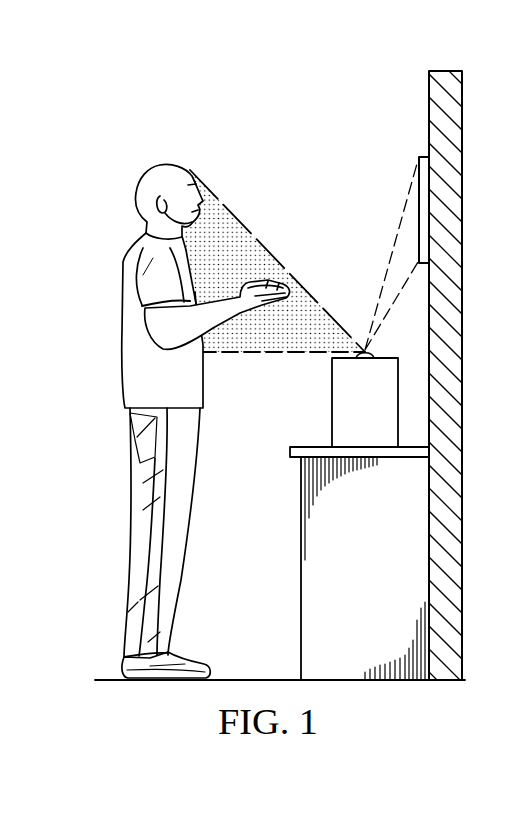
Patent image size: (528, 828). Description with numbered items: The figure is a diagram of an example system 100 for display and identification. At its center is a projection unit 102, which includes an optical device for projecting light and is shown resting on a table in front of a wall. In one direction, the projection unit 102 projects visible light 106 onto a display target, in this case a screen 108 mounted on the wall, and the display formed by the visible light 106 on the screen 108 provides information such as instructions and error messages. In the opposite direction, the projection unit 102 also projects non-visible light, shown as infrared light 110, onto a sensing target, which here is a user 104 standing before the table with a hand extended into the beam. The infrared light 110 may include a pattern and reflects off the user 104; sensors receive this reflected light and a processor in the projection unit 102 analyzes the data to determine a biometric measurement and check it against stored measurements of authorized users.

The system 100 is at (245, 108).
The projection unit 102 is at (332, 403).
The user 104 is at (170, 165).
The visible light 106 is at (388, 272).
The screen 108 is at (418, 212).
The infrared light 110 is at (247, 231).